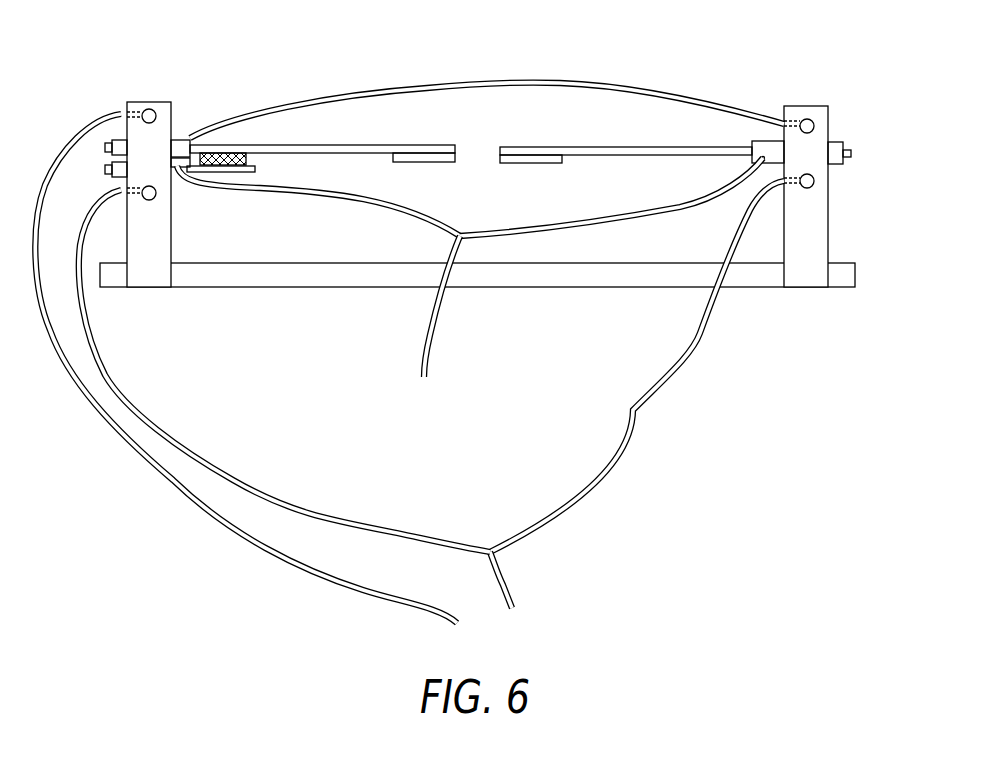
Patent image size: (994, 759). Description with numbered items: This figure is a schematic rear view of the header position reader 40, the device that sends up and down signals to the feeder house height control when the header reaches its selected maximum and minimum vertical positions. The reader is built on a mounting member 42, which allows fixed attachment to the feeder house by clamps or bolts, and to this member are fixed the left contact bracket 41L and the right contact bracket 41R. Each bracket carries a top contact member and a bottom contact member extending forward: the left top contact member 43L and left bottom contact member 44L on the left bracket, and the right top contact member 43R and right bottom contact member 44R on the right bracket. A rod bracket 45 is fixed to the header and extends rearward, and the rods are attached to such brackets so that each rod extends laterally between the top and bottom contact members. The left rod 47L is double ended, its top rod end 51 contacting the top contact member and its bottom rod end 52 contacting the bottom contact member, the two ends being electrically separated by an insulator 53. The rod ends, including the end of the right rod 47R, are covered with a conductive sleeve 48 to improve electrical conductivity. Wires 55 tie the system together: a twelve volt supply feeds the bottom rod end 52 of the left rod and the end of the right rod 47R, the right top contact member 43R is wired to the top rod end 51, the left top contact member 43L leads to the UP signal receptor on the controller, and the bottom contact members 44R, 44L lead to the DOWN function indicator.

The header position reader 40 is at (724, 52).
The left contact bracket 41L is at (172, 237).
The right contact bracket 41R is at (829, 232).
The mounting member 42 is at (755, 288).
The left top contact member 43L is at (153, 110).
The right top contact member 43R is at (829, 126).
The left bottom contact member 44L is at (149, 201).
The right bottom contact member 44R is at (829, 182).
The rod bracket 45 is at (530, 163).
The left rod 47L is at (360, 145).
The right rod 47R is at (617, 147).
The conductive sleeve 48 is at (118, 140).
The top rod end 51 is at (108, 142).
The bottom rod end 52 is at (108, 168).
The insulator 53 is at (247, 160).
The wires 55 is at (565, 83).